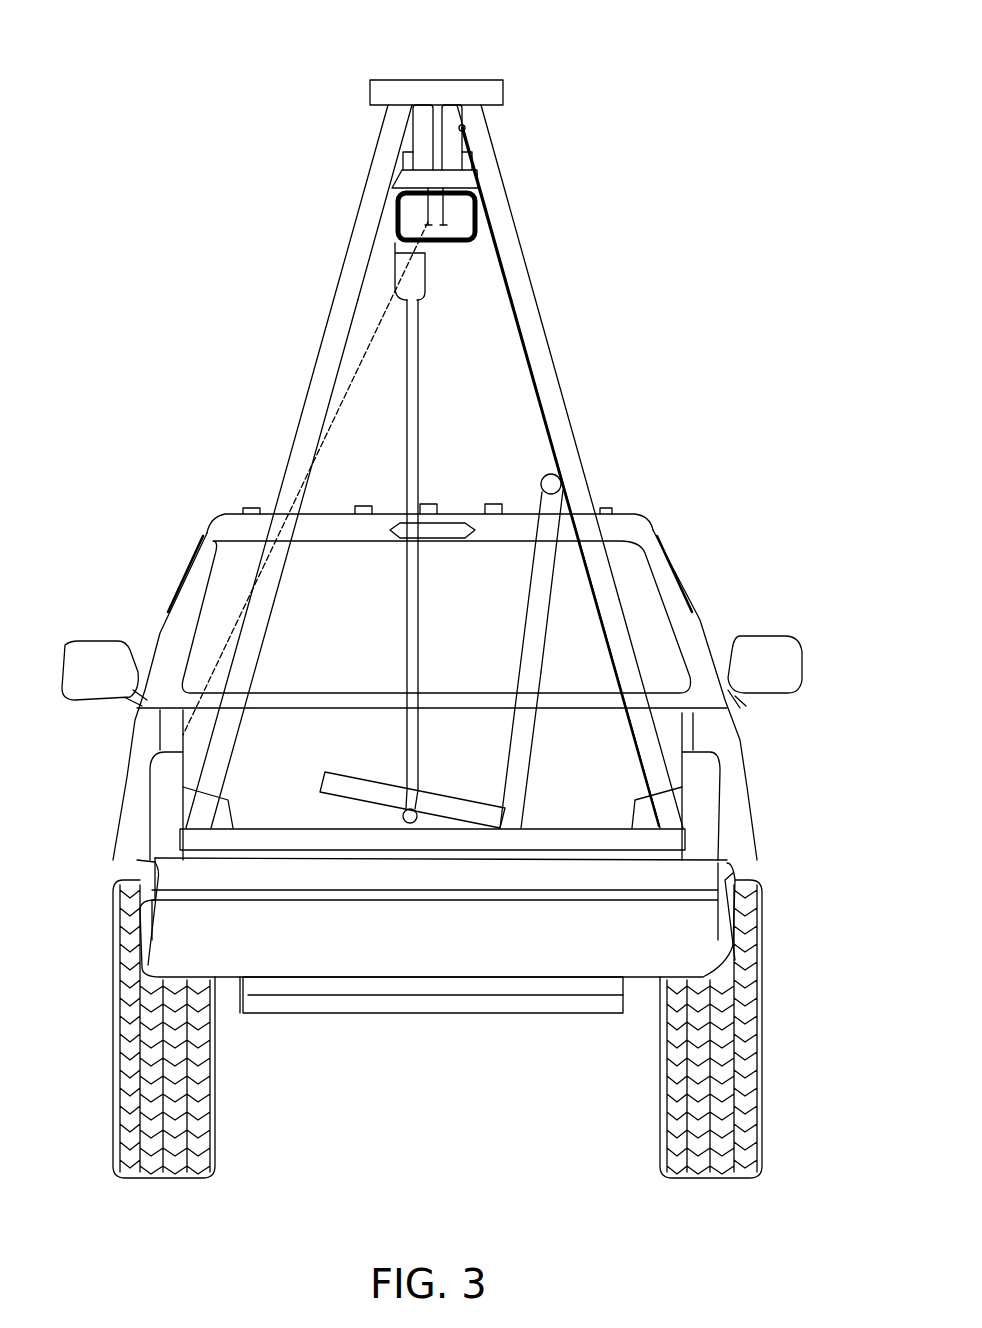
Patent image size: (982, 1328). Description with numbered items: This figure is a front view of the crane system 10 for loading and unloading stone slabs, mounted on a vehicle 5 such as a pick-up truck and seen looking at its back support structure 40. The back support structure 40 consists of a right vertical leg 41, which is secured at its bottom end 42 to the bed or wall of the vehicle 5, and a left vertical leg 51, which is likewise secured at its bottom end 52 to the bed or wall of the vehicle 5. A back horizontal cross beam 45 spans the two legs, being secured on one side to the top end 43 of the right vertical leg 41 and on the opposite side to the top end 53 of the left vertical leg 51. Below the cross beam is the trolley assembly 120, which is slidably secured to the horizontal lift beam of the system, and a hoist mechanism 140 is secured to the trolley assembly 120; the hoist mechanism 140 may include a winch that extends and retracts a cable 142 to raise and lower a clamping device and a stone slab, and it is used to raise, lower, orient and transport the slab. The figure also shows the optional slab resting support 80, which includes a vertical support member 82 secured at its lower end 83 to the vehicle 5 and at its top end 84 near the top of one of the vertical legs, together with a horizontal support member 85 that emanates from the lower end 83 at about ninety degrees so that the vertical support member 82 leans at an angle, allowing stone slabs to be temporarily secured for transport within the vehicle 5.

The vehicle 5 is at (146, 726).
The crane system 10 is at (156, 92).
The back support structure 40 is at (303, 445).
The right vertical leg 41 is at (572, 448).
The bottom end 42 is at (654, 773).
The top end 43 is at (493, 165).
The back horizontal cross beam 45 is at (425, 80).
The left vertical leg 51 is at (318, 389).
The bottom end 52 is at (228, 750).
The top end 53 is at (385, 162).
The slab resting support 80 is at (530, 603).
The vertical support member 82 is at (527, 628).
The lower end 83 is at (516, 761).
The top end 84 is at (543, 505).
The horizontal support member 85 is at (354, 779).
The trolley assembly 120 is at (478, 172).
The hoist mechanism 140 is at (464, 228).
The cable 142 is at (420, 415).